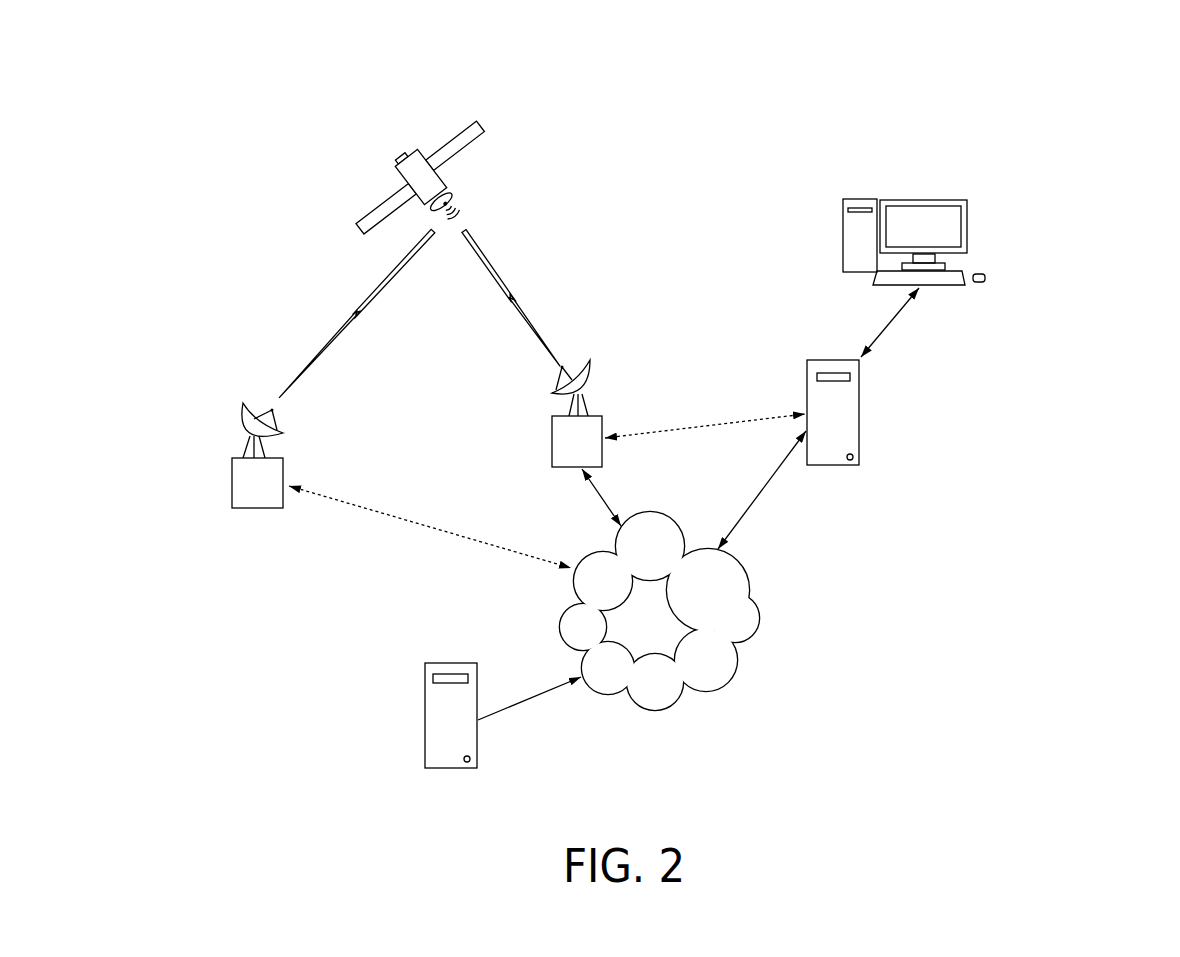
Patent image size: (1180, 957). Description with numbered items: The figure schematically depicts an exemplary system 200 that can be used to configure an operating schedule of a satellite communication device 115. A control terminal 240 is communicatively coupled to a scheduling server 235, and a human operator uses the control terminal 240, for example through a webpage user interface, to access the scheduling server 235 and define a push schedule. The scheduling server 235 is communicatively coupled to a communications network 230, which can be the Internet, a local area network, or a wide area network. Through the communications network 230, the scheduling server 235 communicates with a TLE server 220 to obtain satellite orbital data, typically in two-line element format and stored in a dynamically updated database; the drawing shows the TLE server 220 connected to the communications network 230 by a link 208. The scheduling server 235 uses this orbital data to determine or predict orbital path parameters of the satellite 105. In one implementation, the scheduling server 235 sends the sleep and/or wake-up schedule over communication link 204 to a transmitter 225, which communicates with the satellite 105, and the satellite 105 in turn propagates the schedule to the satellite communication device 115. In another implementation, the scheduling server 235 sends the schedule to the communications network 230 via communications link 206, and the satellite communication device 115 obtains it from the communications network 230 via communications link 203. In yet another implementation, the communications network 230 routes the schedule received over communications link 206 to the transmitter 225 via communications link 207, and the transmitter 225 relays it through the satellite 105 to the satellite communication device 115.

The satellite 105 is at (381, 176).
The satellite communication device 115 is at (241, 497).
The system 200 is at (1090, 113).
The communications link 203 is at (418, 521).
The communication link 204 is at (686, 425).
The communications link 206 is at (763, 488).
The communications link 207 is at (612, 514).
The communication link 208 is at (557, 686).
The TLE server 220 is at (413, 702).
The transmitter 225 is at (561, 454).
The communications network 230 is at (633, 584).
The scheduling server 235 is at (880, 406).
The control terminal 240 is at (829, 229).